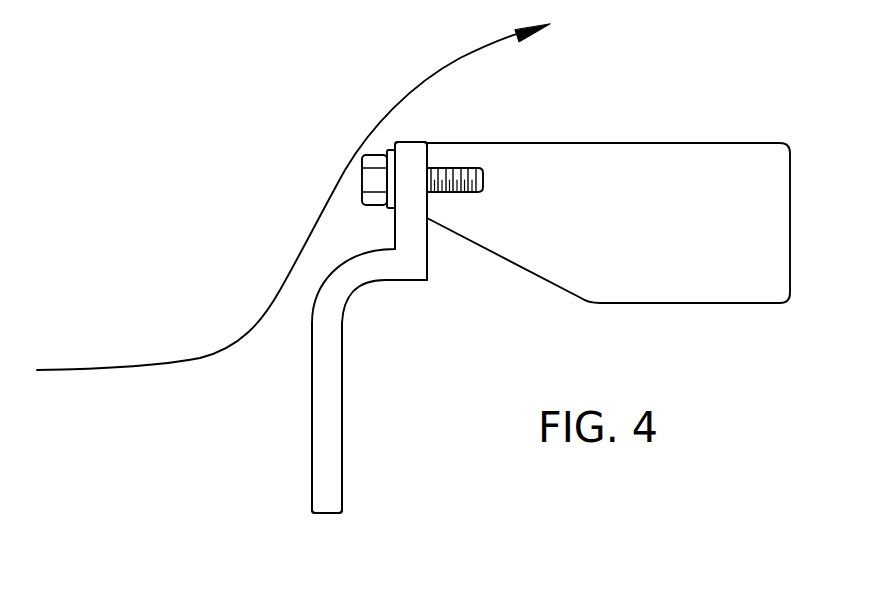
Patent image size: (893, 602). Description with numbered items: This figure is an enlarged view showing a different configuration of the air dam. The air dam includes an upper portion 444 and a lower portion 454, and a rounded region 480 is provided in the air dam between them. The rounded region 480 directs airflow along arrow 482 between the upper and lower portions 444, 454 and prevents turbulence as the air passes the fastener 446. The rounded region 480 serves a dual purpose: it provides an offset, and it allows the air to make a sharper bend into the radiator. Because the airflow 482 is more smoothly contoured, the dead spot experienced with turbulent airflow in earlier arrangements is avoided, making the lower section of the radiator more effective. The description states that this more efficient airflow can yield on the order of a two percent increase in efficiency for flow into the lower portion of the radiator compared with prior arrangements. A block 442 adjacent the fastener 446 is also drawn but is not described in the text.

The mounting block 442 is at (593, 147).
The upper portion 444 is at (410, 148).
The fastener 446 is at (372, 178).
The lower portion 454 is at (323, 515).
The rounded region 480 is at (328, 276).
The arrow 482 is at (307, 240).